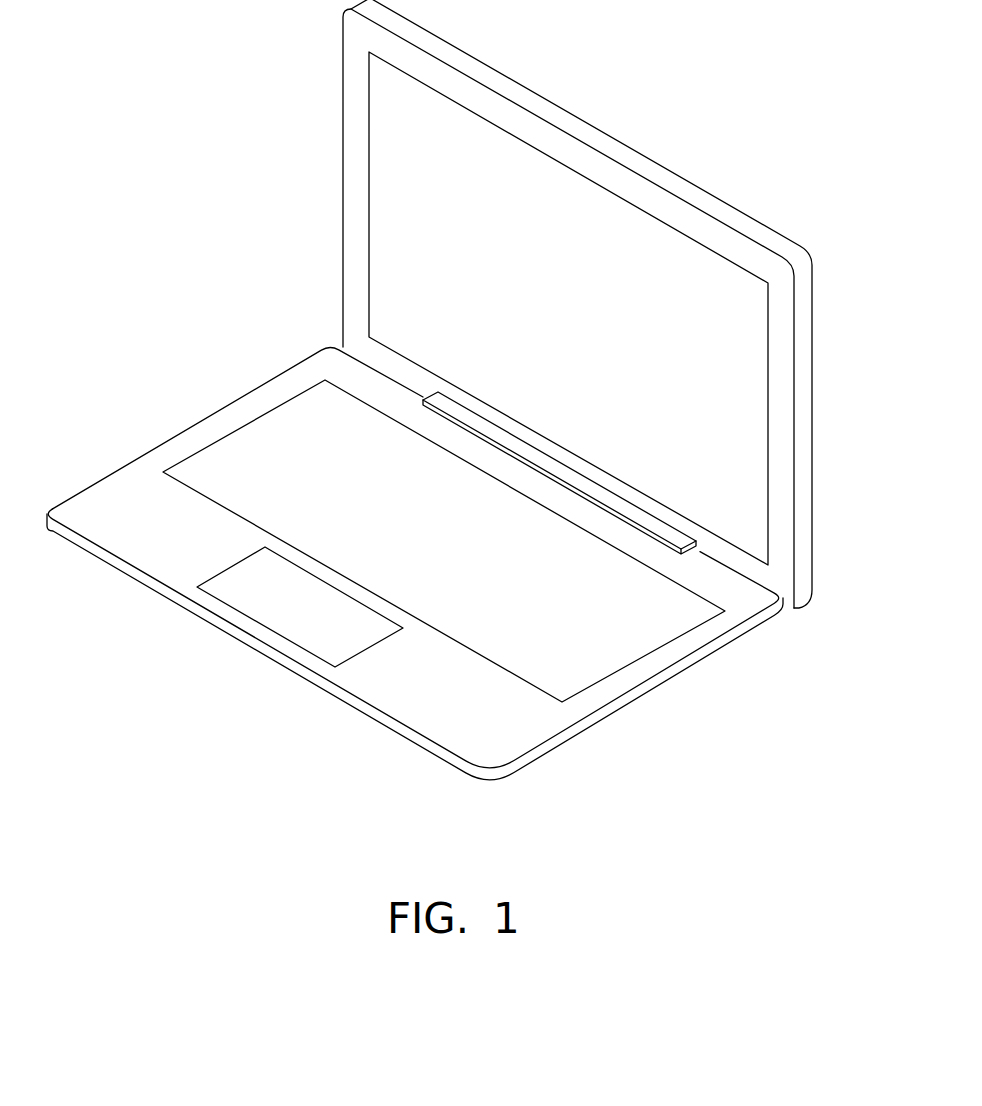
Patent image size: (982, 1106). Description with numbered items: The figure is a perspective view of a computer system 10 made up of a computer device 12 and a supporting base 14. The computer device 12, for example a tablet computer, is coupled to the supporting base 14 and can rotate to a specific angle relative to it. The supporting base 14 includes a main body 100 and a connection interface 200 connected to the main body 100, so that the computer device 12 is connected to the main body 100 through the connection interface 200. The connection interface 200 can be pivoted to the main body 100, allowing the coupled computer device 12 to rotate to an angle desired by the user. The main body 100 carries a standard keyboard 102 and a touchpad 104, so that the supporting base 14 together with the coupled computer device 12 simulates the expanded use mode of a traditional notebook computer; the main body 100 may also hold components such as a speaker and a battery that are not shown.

The computer system 10 is at (776, 140).
The computer device 12 is at (585, 133).
The supporting base 14 is at (684, 739).
The main body 100 is at (267, 390).
The standard keyboard 102 is at (218, 458).
The touchpad 104 is at (247, 597).
The connection interface 200 is at (696, 519).